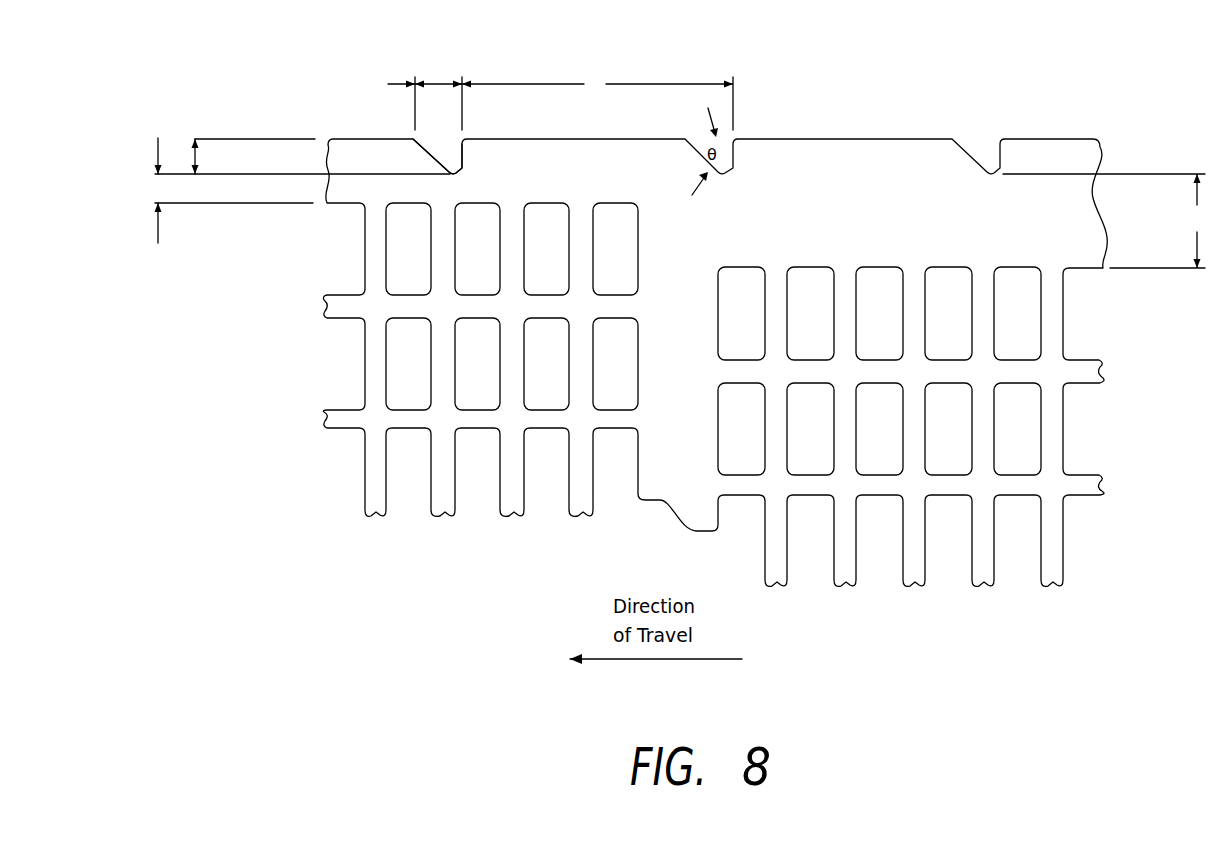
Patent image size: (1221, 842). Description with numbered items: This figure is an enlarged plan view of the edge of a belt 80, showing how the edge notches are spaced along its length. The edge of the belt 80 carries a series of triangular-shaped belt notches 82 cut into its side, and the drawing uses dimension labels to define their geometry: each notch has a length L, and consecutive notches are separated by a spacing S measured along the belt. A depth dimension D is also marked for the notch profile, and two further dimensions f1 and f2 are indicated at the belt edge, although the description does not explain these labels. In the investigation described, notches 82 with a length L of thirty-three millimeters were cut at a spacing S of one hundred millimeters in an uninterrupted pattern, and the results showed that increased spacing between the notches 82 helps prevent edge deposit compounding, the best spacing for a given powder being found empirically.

The belt 80 is at (962, 93).
The belt notches 82 is at (425, 150).
The notch depth D is at (195, 100).
The notch length L is at (415, 102).
The notch spacing S is at (597, 102).
The first flange width f1 is at (158, 243).
The second flange width f2 is at (1104, 221).